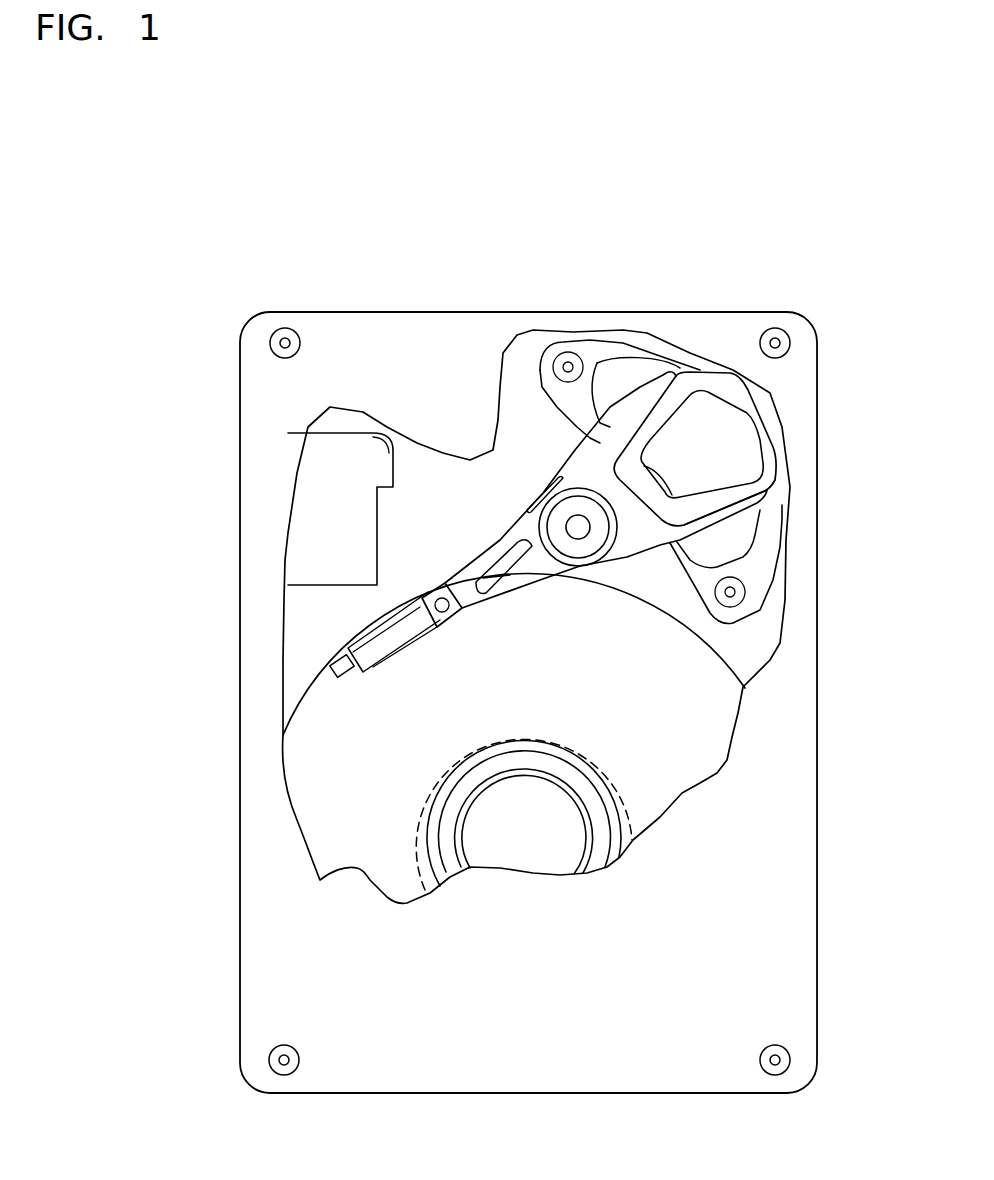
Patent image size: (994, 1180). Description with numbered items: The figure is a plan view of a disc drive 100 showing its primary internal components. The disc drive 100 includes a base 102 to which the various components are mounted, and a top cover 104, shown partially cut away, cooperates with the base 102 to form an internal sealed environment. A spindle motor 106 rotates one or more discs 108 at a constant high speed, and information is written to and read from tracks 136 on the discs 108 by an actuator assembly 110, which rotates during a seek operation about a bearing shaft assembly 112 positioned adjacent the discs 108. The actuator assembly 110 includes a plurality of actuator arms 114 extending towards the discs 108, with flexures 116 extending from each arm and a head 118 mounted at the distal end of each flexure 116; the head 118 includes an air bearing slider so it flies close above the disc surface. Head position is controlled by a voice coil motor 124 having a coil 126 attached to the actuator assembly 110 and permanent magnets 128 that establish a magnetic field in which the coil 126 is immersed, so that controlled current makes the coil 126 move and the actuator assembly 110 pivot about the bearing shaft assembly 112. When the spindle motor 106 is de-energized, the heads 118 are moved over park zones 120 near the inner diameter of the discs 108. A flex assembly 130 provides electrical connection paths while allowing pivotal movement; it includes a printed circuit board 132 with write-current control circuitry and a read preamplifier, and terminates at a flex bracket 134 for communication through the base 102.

The disc drive 100 is at (232, 262).
The base 102 is at (305, 618).
The top cover 104 is at (273, 945).
The spindle motor 106 is at (535, 845).
The disc 108 is at (690, 765).
The actuator assembly 110 is at (543, 563).
The bearing shaft assembly 112 is at (580, 527).
The actuator arm 114 is at (503, 597).
The flexure 116 is at (367, 652).
The head 118 is at (337, 673).
The park zone 120 is at (412, 833).
The voice coil motor 124 is at (643, 326).
The coil 126 is at (765, 455).
The permanent magnet 128 is at (605, 388).
The flex assembly 130 is at (494, 523).
The printed circuit board 132 is at (545, 470).
The flex bracket 134 is at (325, 490).
The track 136 is at (622, 818).